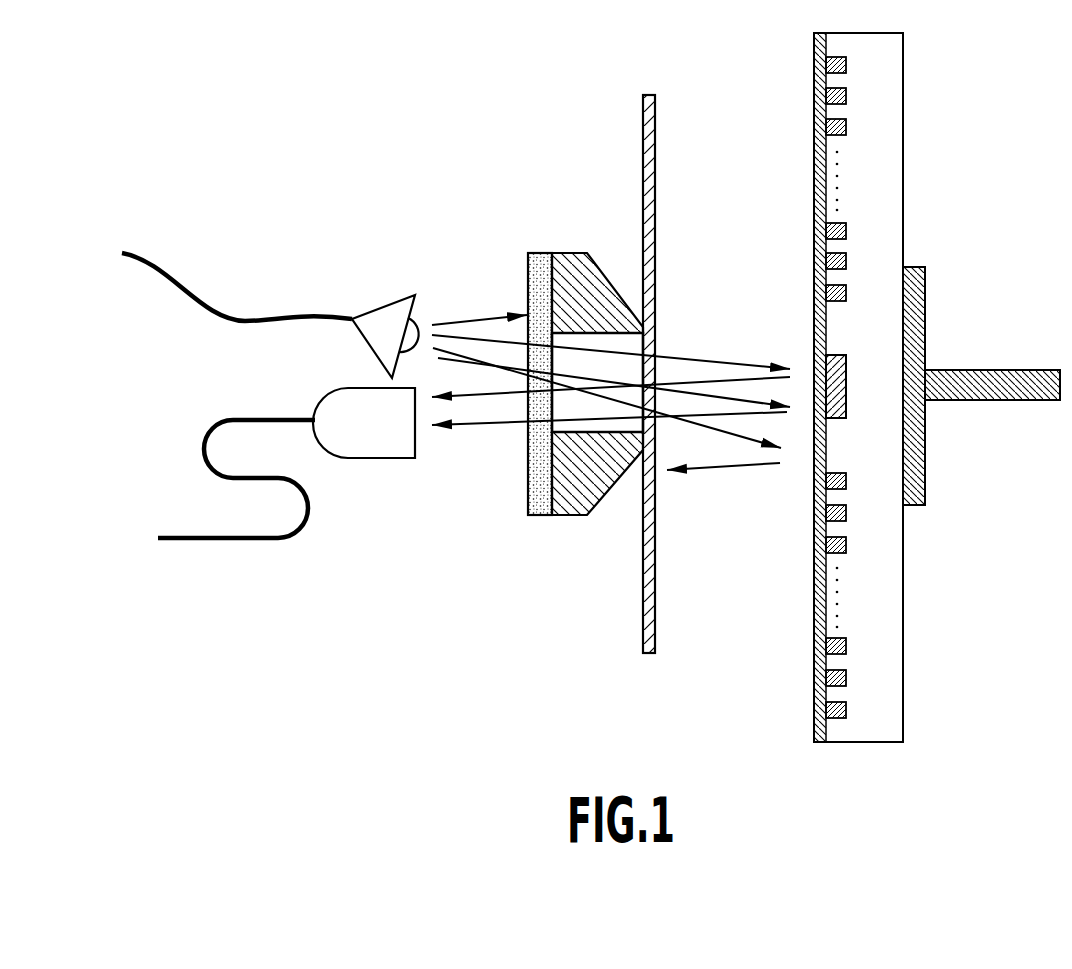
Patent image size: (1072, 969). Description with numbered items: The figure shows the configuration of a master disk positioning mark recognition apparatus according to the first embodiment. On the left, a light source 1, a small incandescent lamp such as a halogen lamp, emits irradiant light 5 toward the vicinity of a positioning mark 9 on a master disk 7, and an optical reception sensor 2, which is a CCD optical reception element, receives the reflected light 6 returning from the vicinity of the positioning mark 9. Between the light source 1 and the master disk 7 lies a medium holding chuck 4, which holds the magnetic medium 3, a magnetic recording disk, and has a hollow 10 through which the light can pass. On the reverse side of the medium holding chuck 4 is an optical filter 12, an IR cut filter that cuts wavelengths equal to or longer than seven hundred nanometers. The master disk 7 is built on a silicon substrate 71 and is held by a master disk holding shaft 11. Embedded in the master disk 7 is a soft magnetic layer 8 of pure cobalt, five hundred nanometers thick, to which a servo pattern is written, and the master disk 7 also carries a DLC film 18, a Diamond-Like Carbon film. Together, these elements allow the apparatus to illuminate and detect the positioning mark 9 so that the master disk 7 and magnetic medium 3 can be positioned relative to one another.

The light source 1 is at (390, 304).
The optical reception sensor 2 is at (367, 452).
The magnetic medium 3 is at (656, 112).
The medium holding chuck 4 is at (570, 517).
The irradiant light 5 is at (478, 312).
The reflected light 6 is at (483, 430).
The master disk 7 is at (865, 745).
The soft magnetic layer 8 is at (826, 228).
The positioning mark 9 is at (847, 367).
The hollow of the chuck 10 is at (610, 333).
The master disk holding shaft 11 is at (1007, 390).
The optical filter 12 is at (540, 253).
The DLC film 18 is at (814, 678).
The silicon substrate 71 is at (897, 610).